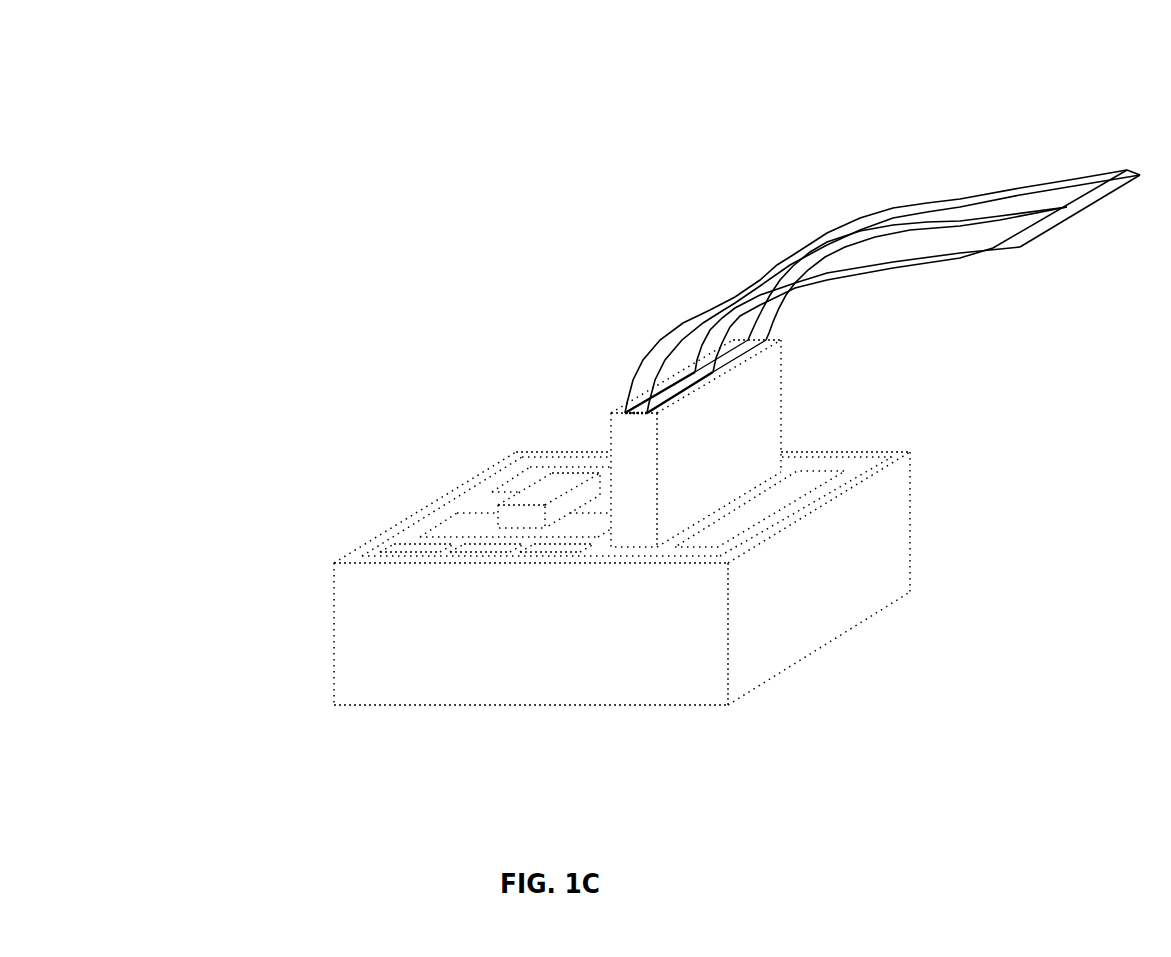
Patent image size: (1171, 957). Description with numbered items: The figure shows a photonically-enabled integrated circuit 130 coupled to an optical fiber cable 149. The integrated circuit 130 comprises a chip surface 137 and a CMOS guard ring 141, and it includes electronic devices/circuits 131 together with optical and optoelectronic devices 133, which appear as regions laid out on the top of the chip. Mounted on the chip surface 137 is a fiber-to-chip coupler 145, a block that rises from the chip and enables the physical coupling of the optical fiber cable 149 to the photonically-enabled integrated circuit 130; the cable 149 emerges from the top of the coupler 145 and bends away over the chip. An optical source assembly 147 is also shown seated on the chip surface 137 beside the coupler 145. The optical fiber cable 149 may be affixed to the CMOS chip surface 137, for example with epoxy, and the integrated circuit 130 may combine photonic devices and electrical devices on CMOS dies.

The photonically-enabled integrated circuit 130 is at (180, 113).
The electronic devices/circuits 131 is at (540, 553).
The optical and optoelectronic devices 133 is at (490, 533).
The chip surface 137 is at (473, 505).
The CMOS guard ring 141 is at (897, 452).
The fiber-to-chip coupler 145 is at (740, 453).
The optical source assembly 147 is at (558, 483).
The optical fiber cable 149 is at (943, 200).